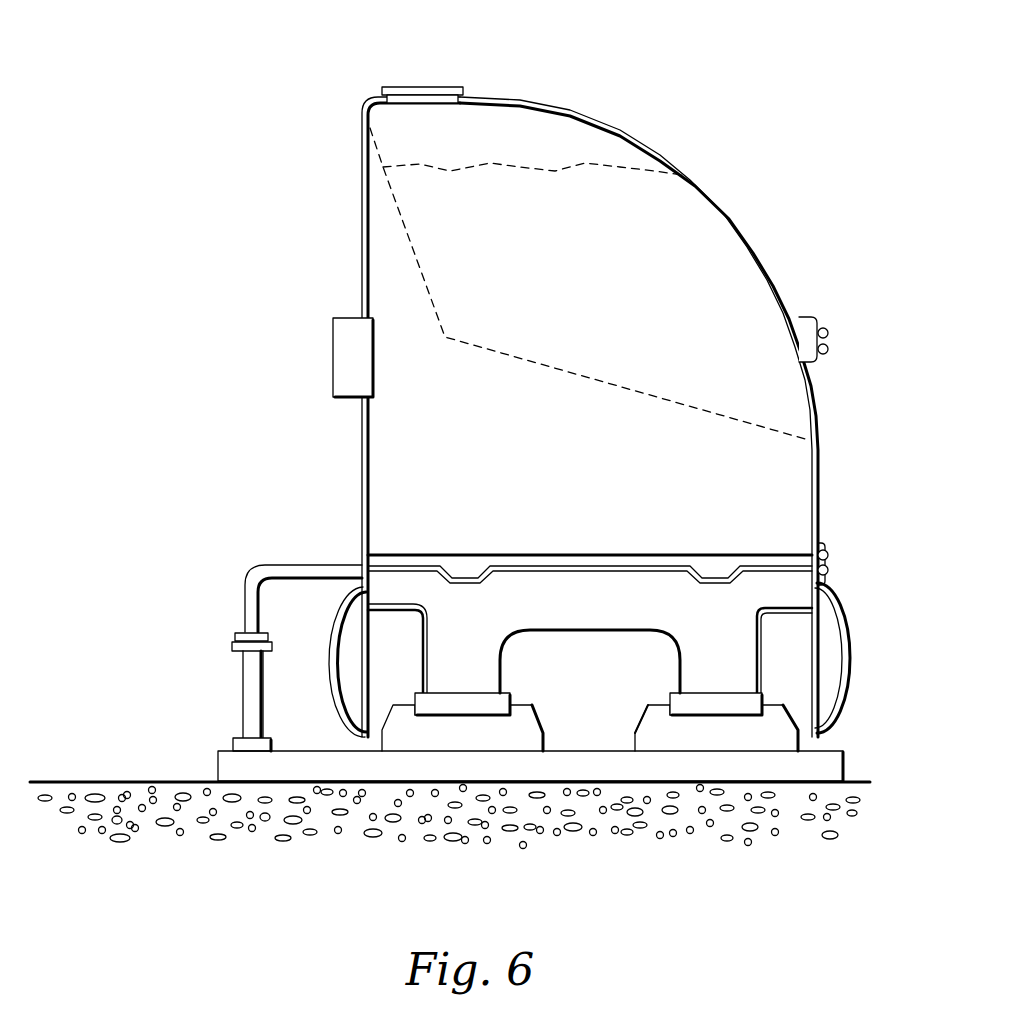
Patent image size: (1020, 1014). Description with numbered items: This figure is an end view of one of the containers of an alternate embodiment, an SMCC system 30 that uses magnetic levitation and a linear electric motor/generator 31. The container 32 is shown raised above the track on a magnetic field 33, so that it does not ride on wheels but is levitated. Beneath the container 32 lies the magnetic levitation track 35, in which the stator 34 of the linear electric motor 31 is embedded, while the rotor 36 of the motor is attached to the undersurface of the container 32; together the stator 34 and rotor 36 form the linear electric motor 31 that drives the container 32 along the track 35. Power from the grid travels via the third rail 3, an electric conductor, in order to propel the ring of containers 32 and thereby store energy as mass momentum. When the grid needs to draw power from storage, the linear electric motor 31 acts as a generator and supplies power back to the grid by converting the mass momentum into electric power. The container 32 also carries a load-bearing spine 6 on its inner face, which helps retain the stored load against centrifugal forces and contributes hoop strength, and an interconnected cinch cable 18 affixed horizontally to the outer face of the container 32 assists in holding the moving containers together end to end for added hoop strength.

The SMCC system 30 is at (288, 68).
The container 32 is at (737, 216).
The cinch cable 18 is at (824, 327).
The load-bearing spine 6 is at (333, 345).
The third rail 3 is at (241, 685).
The linear electric motor/generator 31 is at (655, 679).
The magnetic field 33 is at (503, 717).
The stator 34 is at (632, 738).
The magnetic levitation track 35 is at (404, 758).
The rotor 36 is at (453, 705).